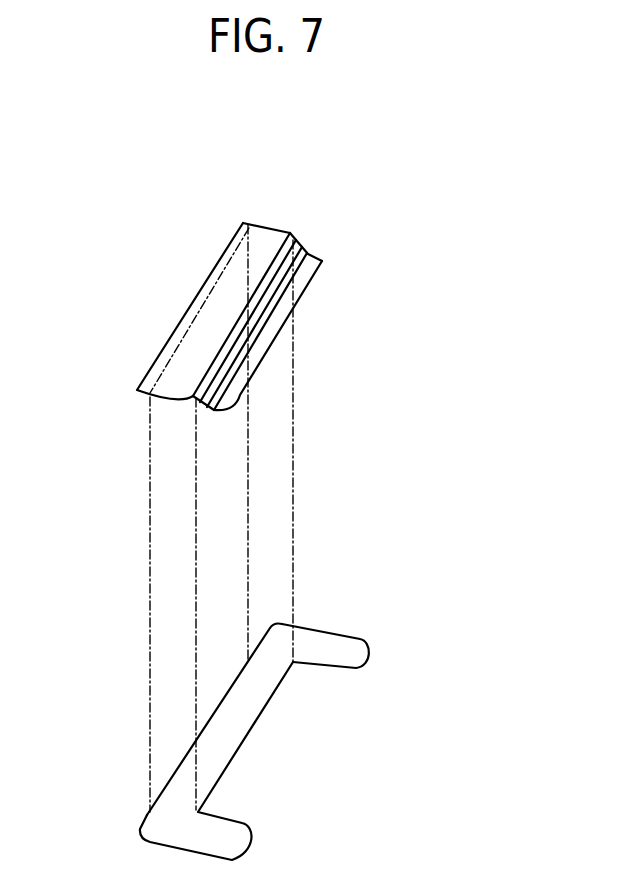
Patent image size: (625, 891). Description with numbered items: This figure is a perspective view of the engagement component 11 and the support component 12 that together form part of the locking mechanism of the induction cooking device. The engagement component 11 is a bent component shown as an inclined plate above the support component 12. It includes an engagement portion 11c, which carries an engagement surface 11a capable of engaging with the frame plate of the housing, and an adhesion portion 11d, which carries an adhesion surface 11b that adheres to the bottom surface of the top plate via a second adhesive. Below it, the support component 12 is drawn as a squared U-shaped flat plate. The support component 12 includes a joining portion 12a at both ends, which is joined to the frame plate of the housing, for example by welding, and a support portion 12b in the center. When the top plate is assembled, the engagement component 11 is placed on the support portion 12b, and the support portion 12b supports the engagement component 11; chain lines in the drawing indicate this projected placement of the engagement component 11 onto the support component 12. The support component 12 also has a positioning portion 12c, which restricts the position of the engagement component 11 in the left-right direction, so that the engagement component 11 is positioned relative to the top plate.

The engagement component 11 is at (232, 475).
The engagement surface 11a is at (312, 255).
The adhesion surface 11b is at (262, 227).
The engagement portion 11c is at (265, 335).
The adhesion portion 11d is at (197, 358).
The support component 12 is at (252, 716).
The joining portion 12a is at (355, 657).
The support portion 12b is at (243, 690).
The positioning portion 12c is at (220, 733).